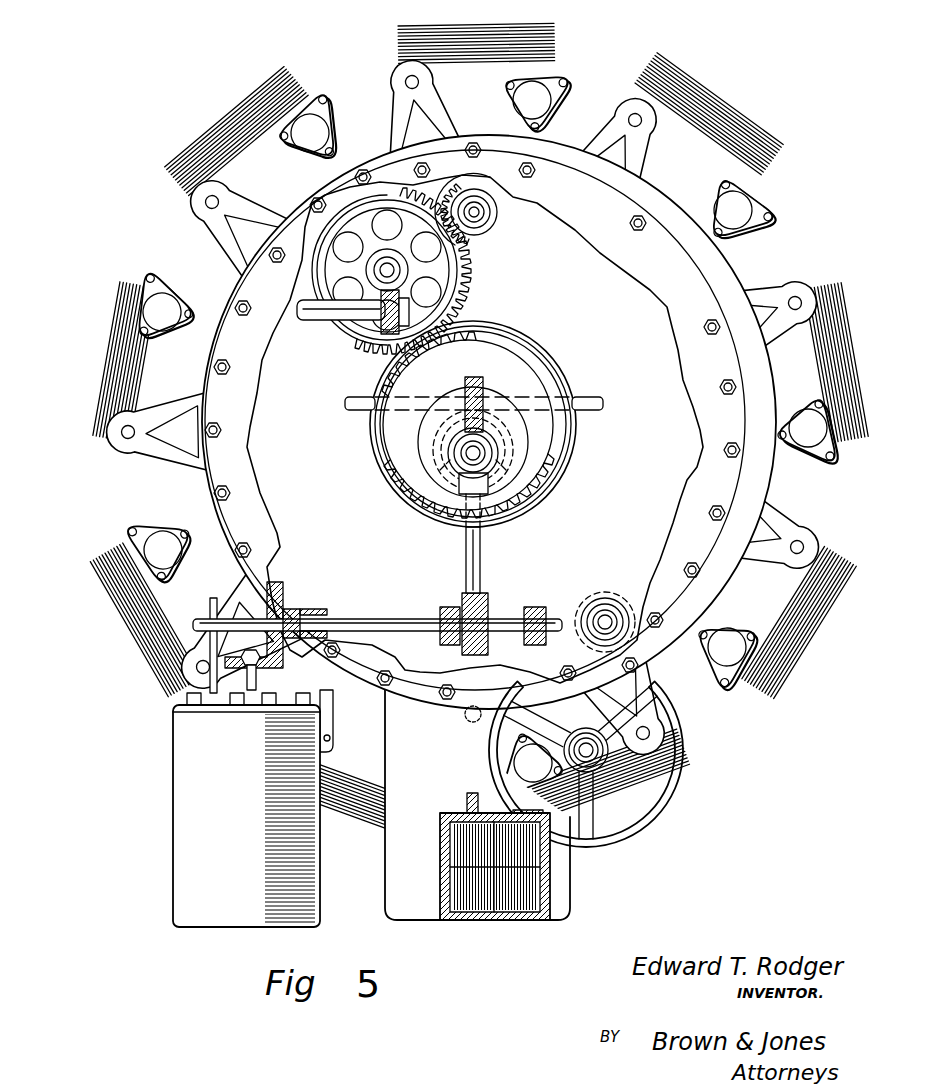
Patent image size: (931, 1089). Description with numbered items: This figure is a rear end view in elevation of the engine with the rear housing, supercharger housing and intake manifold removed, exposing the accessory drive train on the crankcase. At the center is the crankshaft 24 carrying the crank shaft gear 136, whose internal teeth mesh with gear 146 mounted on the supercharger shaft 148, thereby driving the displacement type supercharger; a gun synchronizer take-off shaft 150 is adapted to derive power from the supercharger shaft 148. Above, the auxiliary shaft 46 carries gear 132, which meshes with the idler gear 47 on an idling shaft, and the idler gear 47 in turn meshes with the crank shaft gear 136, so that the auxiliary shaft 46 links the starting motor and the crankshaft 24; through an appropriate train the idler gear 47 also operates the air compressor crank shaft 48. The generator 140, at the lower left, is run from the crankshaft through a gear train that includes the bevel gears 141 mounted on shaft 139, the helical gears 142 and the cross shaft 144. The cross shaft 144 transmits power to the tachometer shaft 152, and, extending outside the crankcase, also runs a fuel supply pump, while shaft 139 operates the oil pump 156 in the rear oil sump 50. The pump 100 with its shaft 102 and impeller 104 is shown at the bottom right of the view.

The crankshaft 24 is at (514, 428).
The auxiliary shaft 46 is at (483, 217).
The idler gear 47 is at (455, 283).
The air compressor crank shaft 48 is at (310, 318).
The oil sump 50 is at (562, 868).
The pump 100 is at (654, 808).
The pump shaft 102 is at (601, 745).
The pump impeller 104 is at (676, 760).
The gear 132 is at (500, 213).
The crank shaft gear 136 is at (556, 364).
The shaft 139 is at (484, 548).
The generator 140 is at (253, 808).
The bevel gears 141 is at (498, 464).
The helical gears 142 is at (490, 601).
The cross shaft 144 is at (368, 619).
The gear 146 is at (424, 498).
The supercharger shaft 148 is at (479, 455).
The gun synchronizer take-off shaft 150 is at (604, 398).
The tachometer shaft 152 is at (608, 597).
The oil pump 156 is at (531, 891).